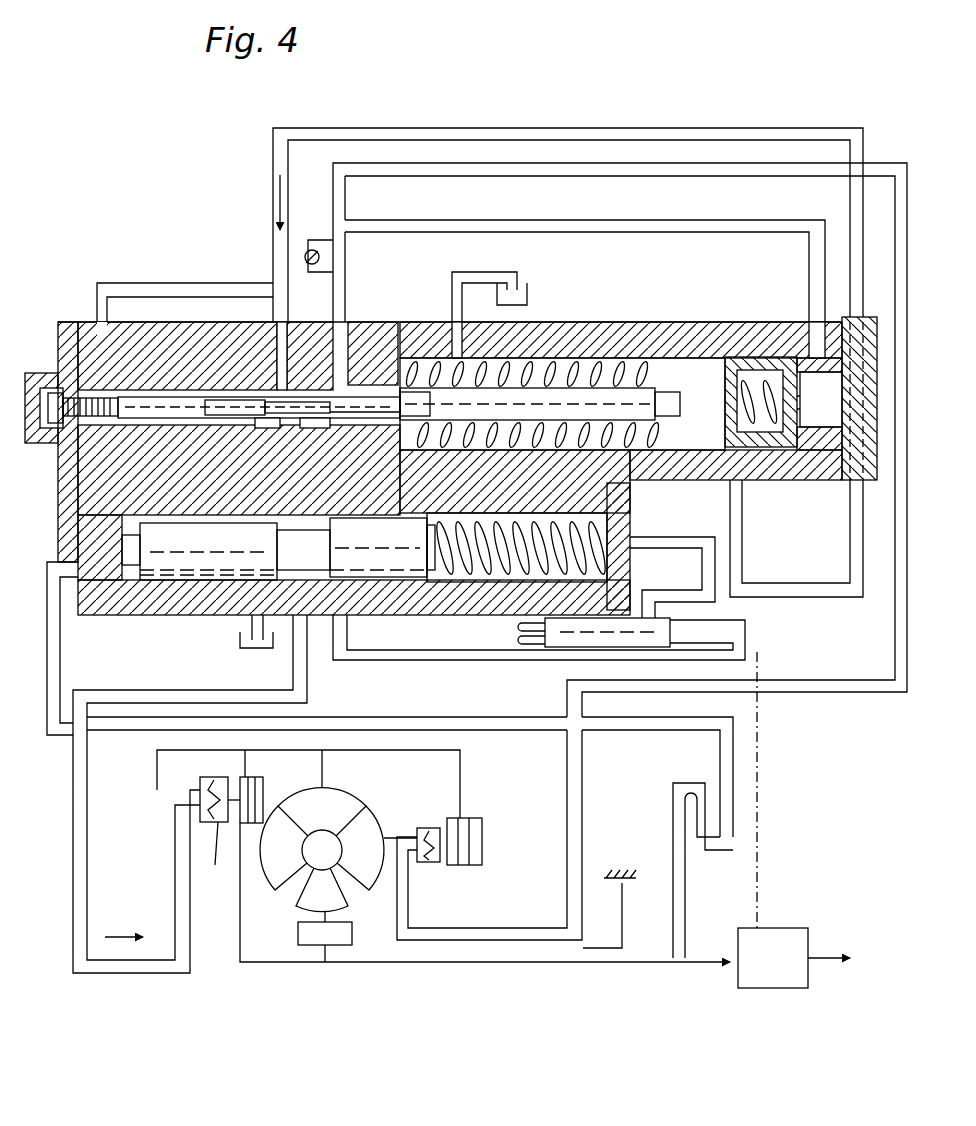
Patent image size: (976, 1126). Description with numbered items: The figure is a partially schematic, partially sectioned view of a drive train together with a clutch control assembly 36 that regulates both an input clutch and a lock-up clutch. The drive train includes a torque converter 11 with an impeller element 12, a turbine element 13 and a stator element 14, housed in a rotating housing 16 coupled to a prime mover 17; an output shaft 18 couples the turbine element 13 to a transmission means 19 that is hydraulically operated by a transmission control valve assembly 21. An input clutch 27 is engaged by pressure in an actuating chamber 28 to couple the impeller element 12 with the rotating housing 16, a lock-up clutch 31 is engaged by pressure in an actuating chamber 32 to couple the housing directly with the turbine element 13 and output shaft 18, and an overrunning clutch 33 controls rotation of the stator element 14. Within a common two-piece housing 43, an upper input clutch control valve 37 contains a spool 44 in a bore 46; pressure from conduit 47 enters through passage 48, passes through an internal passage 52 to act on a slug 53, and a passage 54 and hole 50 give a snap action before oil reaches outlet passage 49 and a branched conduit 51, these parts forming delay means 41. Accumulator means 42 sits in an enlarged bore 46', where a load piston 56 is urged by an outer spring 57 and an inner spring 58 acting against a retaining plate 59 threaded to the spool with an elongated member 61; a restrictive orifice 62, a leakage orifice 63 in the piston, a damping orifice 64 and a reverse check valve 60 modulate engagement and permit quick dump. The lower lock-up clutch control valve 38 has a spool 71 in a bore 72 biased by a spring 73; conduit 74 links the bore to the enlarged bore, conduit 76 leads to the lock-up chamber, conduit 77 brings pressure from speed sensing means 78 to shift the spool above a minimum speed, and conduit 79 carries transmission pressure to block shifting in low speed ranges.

The torque converter 11 is at (334, 790).
The impeller element 12 is at (366, 816).
The turbine element 13 is at (266, 800).
The stator element 14 is at (300, 902).
The rotating housing 16 is at (460, 750).
The prime mover 17 is at (105, 937).
The output shaft 18 is at (520, 963).
The transmission means 19 is at (788, 972).
The transmission control valve assembly 21 is at (560, 645).
The input clutch 27 is at (486, 842).
The actuating chamber 28 is at (433, 864).
The lock-up clutch 31 is at (224, 777).
The actuating chamber 32 is at (217, 826).
The overrunning clutch 33 is at (322, 946).
The clutch control assembly 36 is at (148, 245).
The input clutch control valve 37 is at (40, 330).
The lock-up clutch control valve 38 is at (66, 556).
The delay means 41 is at (170, 370).
The accumulator means 42 is at (762, 345).
The valve housing 43 is at (396, 332).
The spool 44 is at (310, 428).
The bore 46 is at (263, 444).
The enlarged bore 46' is at (562, 361).
The conduit 47 is at (575, 125).
The passage 48 is at (284, 340).
The outlet passage 49 is at (360, 348).
The hole 50 is at (198, 398).
The branched conduit 51 is at (348, 220).
The internal passage 52 is at (262, 385).
The slug 53 is at (140, 392).
The passage 54 is at (152, 433).
The load piston 56 is at (782, 450).
The outer spring 57 is at (622, 520).
The inner spring 58 is at (640, 432).
The retaining plate 59 is at (440, 400).
The reverse check valve 60 is at (310, 250).
The elongated member 61 is at (528, 414).
The restrictive orifice 62 is at (348, 266).
The leakage orifice 63 is at (815, 413).
The orifice 64 is at (183, 283).
The spool 71 is at (366, 556).
The bore 72 is at (215, 525).
The spring 73 is at (612, 540).
The conduit 74 is at (745, 640).
The conduit 76 is at (312, 698).
The conduit 77 is at (405, 717).
The speed sensing means 78 is at (668, 812).
The conduit 79 is at (712, 540).